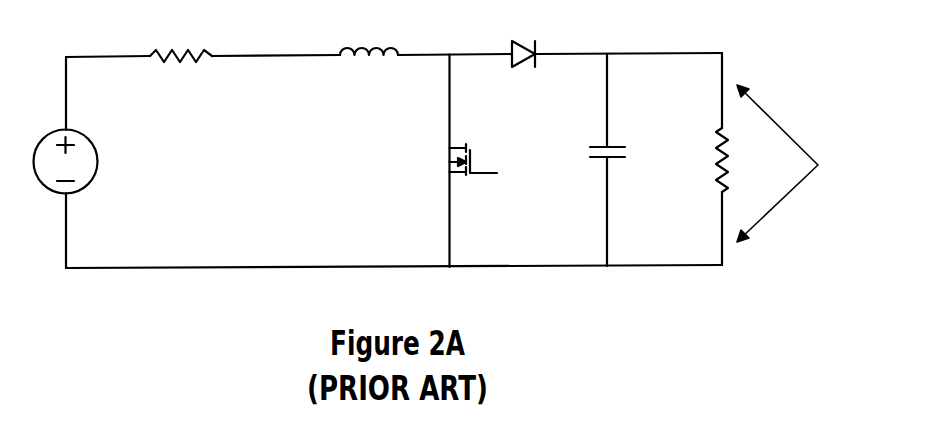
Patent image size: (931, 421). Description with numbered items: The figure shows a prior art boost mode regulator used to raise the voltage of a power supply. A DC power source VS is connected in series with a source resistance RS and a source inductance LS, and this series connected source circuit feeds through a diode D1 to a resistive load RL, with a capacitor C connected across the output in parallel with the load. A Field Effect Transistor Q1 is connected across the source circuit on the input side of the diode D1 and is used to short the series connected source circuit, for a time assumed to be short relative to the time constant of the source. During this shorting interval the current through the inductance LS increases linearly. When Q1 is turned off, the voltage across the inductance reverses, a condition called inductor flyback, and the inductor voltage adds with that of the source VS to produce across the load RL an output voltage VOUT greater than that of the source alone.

The DC power source VS is at (85, 162).
The source resistance RS is at (181, 35).
The source inductance LS is at (369, 31).
The diode D1 is at (525, 37).
The Field Effect Transistor Q1 is at (474, 161).
The output capacitor C is at (619, 160).
The resistive load RL is at (739, 160).
The output voltage VOUT is at (811, 163).